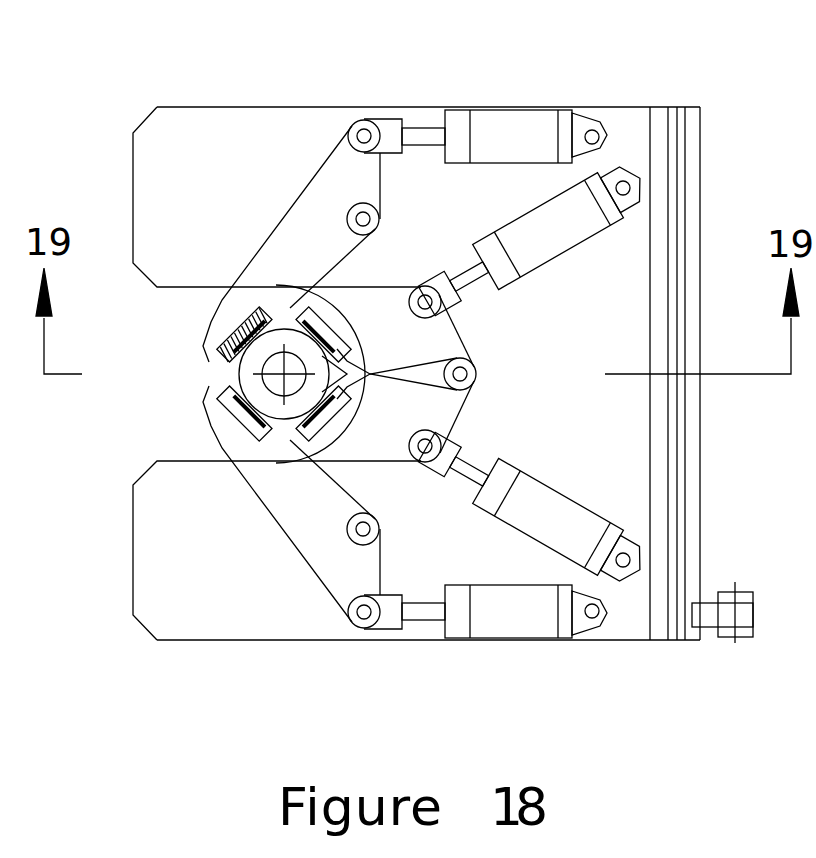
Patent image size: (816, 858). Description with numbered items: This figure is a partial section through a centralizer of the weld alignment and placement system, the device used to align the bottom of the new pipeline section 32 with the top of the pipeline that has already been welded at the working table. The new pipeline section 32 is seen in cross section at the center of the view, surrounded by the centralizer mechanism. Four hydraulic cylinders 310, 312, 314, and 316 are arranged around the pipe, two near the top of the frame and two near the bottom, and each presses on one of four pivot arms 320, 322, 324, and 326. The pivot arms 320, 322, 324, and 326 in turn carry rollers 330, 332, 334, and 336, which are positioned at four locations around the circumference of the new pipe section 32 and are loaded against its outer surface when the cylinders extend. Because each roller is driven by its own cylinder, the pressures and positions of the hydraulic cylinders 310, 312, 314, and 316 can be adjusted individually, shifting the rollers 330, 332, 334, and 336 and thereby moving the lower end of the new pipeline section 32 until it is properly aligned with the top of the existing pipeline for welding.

The new pipeline section 32 is at (252, 374).
The hydraulic cylinder 310 is at (498, 116).
The hydraulic cylinder 312 is at (542, 253).
The hydraulic cylinder 314 is at (547, 498).
The hydraulic cylinder 316 is at (523, 625).
The pivot arm 320 is at (292, 231).
The pivot arm 322 is at (380, 286).
The pivot arm 324 is at (472, 402).
The pivot arm 326 is at (288, 515).
The roller 330 is at (225, 335).
The roller 332 is at (322, 334).
The roller 334 is at (312, 428).
The roller 336 is at (240, 418).